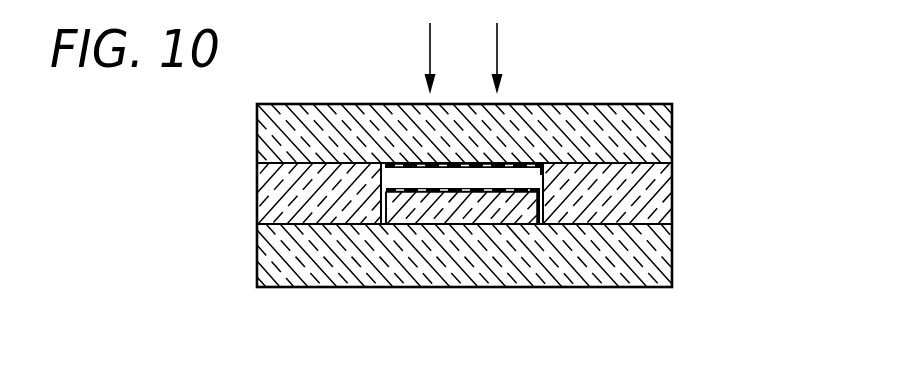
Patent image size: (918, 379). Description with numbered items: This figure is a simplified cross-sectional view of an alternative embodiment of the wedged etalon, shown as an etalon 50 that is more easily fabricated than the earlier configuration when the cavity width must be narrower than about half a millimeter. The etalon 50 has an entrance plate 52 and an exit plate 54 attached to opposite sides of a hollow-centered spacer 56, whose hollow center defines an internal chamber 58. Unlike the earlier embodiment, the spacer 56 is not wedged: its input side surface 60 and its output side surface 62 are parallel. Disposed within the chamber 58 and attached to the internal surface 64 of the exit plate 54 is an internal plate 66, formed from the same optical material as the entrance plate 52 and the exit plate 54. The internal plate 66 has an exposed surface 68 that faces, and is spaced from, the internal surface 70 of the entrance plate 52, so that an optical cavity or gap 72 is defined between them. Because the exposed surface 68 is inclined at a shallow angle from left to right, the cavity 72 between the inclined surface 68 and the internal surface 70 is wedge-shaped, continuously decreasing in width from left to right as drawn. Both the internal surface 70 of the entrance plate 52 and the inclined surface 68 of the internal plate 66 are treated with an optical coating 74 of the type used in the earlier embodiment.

The etalon 50 is at (684, 92).
The entrance plate 52 is at (673, 128).
The exit plate 54 is at (673, 268).
The spacer 56 is at (673, 203).
The internal chamber 58 is at (563, 162).
The input side surface 60 is at (270, 163).
The output side surface 62 is at (268, 226).
The internal surface 64 is at (419, 222).
The internal plate 66 is at (388, 205).
The exposed surface 68 is at (408, 192).
The internal surface 70 is at (452, 165).
The optical cavity 72 is at (530, 168).
The optical coating 74 is at (495, 166).